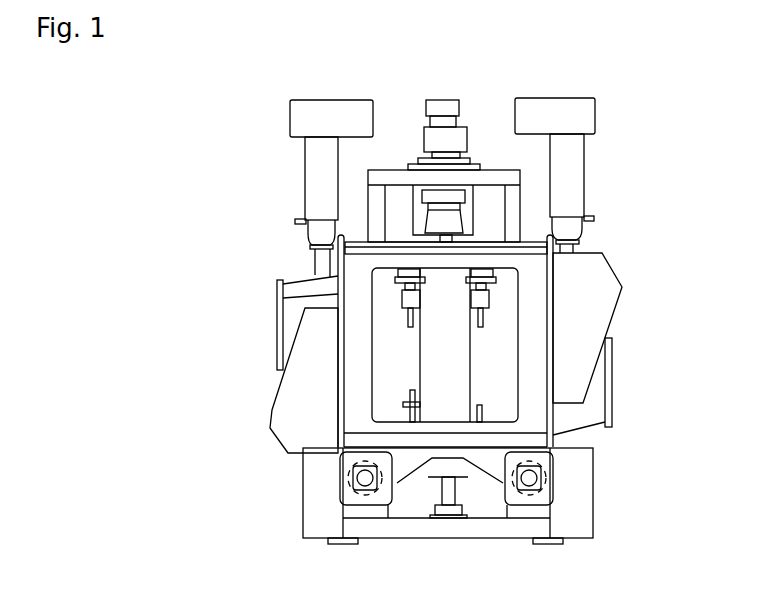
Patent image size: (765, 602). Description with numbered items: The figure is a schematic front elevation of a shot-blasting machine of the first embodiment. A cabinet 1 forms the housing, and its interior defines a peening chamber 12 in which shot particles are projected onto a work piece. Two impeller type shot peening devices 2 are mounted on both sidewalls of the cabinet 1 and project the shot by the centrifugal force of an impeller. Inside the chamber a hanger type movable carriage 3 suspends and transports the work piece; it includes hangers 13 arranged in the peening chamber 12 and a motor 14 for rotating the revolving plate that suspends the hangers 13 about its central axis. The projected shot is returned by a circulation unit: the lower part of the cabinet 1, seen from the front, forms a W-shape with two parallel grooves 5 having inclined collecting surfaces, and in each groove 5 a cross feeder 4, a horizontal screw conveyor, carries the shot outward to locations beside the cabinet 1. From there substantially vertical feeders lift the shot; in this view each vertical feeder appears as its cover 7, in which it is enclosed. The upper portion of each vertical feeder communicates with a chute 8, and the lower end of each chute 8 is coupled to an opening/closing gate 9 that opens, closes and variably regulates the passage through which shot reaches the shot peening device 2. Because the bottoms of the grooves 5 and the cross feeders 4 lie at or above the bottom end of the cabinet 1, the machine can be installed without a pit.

The cabinet 1 is at (537, 280).
The shot peening device 2 is at (279, 283).
The movable carriage 3 is at (512, 278).
The cross feeder 4 is at (343, 482).
The groove 5 is at (345, 498).
The cover 7 is at (300, 88).
The chute 8 is at (312, 180).
The opening/closing gate 9 is at (300, 226).
The peening chamber 12 is at (512, 370).
The hanger 13 is at (412, 318).
The motor 14 is at (448, 103).